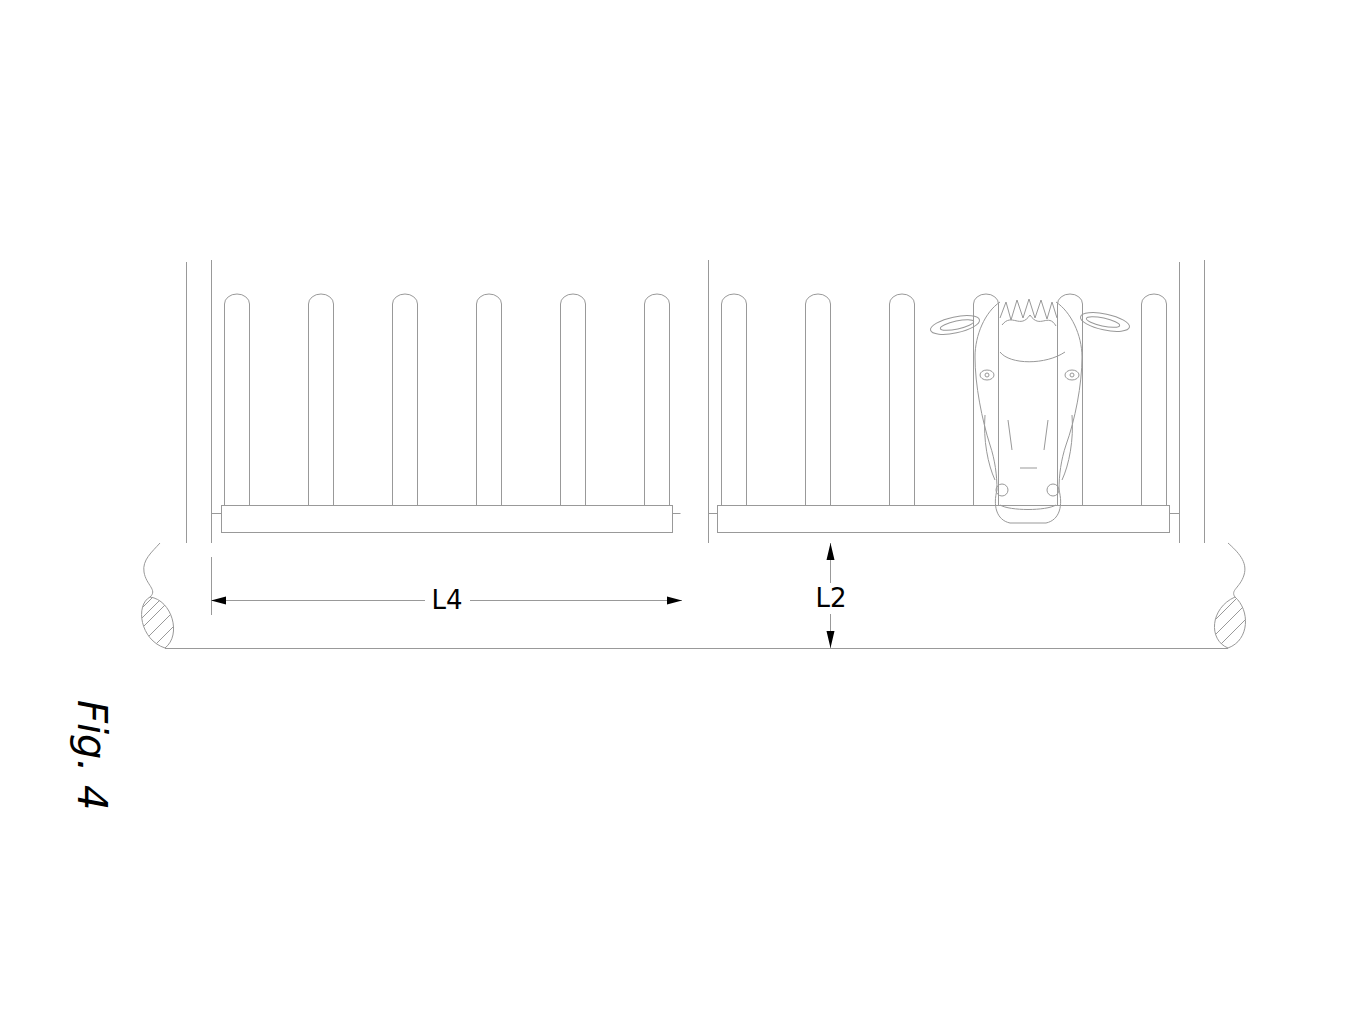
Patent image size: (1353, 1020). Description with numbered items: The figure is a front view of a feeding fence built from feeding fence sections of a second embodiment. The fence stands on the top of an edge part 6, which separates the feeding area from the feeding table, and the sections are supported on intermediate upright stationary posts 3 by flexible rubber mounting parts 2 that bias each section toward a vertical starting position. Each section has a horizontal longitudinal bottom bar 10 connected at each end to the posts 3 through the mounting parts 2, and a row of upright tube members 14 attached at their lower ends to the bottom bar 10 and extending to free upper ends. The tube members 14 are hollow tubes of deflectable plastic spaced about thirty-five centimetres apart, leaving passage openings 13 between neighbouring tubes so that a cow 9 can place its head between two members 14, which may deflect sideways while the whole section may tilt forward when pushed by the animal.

The flexible mounting part 2 is at (207, 518).
The upright stationary post 3 is at (197, 277).
The edge part 6 is at (1165, 620).
The cow 9 is at (1022, 300).
The bottom bar 10 is at (394, 520).
The passage openings for the heads of animals 13 is at (264, 382).
The upright tube members 14 is at (243, 310).